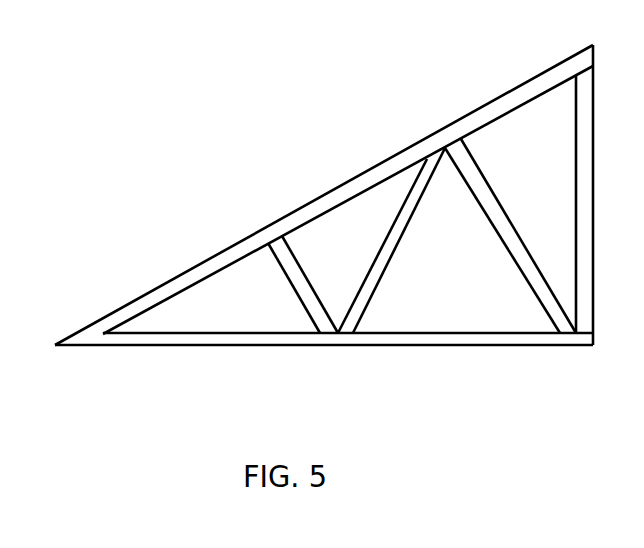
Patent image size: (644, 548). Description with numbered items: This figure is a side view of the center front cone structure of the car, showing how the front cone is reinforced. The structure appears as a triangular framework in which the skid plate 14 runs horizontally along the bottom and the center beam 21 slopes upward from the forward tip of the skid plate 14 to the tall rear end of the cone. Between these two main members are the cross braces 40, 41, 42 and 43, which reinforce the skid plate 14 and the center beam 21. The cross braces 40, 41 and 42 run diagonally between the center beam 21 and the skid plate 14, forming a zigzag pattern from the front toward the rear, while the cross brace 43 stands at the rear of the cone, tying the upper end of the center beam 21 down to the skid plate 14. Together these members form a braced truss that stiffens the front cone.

The skid plate 14 is at (262, 333).
The center beam 21 is at (462, 122).
The cross brace 40 is at (311, 310).
The cross brace 41 is at (385, 247).
The cross brace 42 is at (515, 247).
The cross brace 43 is at (583, 177).